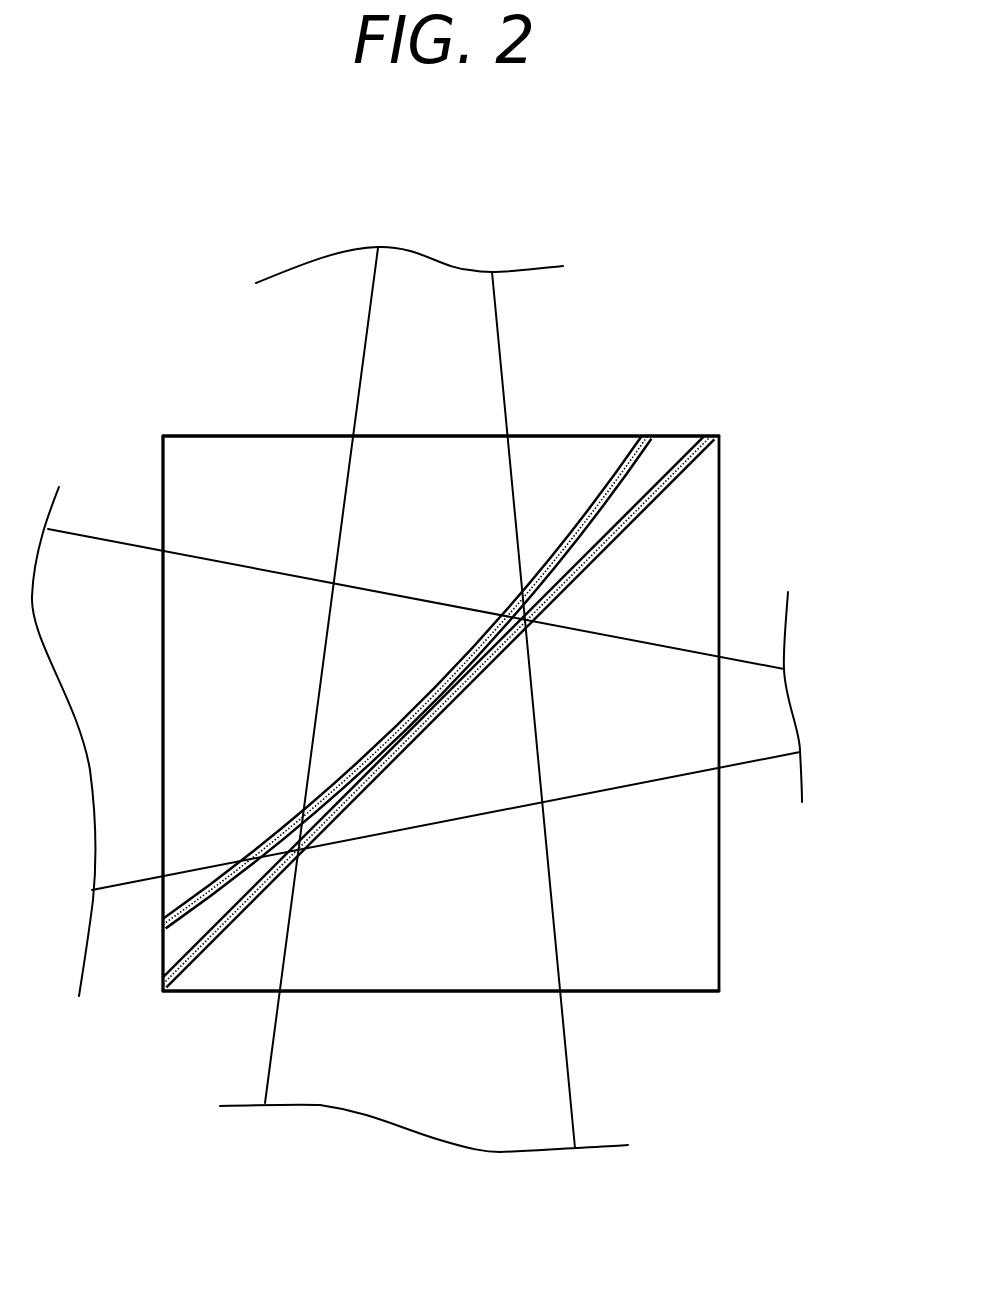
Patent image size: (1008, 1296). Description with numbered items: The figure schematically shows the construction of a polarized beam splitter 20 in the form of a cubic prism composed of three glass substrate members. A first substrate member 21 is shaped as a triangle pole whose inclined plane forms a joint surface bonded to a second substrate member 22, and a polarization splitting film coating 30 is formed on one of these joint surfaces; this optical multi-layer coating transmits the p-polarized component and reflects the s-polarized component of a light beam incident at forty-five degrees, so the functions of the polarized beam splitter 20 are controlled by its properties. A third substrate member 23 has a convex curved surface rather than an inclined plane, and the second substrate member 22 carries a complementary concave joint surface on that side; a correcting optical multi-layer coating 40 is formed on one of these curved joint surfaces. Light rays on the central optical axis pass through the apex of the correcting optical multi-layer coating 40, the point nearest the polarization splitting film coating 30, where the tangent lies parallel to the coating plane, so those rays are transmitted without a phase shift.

The polarized beam splitter 20 is at (720, 917).
The first substrate member 21 is at (634, 968).
The second substrate member 22 is at (673, 450).
The third substrate member 23 is at (244, 490).
The polarization splitting film coating 30 is at (680, 477).
The correcting optical multi-layer coating 40 is at (637, 447).